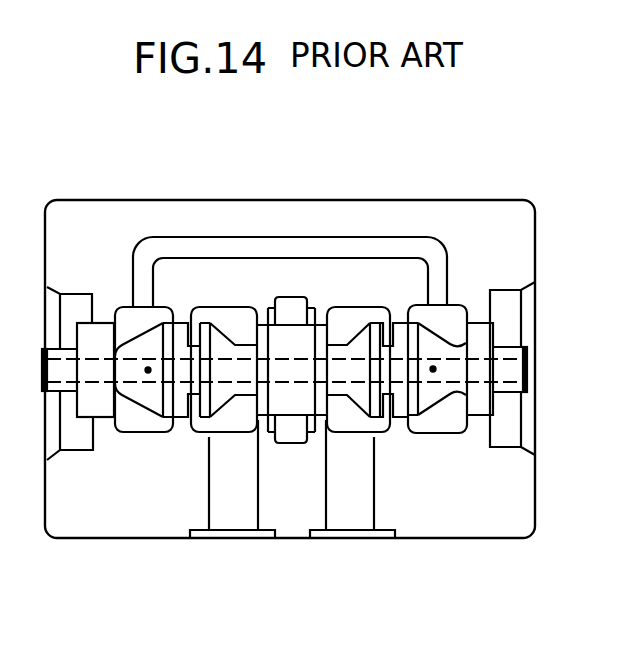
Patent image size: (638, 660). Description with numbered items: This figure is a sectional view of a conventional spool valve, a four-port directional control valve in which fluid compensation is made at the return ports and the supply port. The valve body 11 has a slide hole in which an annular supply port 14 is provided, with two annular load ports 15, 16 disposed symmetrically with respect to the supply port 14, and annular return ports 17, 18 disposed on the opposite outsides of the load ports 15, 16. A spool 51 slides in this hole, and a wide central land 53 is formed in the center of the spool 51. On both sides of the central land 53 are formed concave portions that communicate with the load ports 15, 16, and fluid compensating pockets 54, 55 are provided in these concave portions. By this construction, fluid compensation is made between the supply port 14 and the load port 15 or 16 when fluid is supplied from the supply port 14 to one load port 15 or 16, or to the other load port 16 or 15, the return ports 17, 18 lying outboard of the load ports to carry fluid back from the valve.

The valve body 11 is at (497, 520).
The supply port 14 is at (292, 433).
The load port 15 is at (220, 423).
The load port 16 is at (363, 423).
The return port 17 is at (143, 313).
The return port 18 is at (433, 313).
The spool 51 is at (105, 375).
The central land 53 is at (300, 325).
The fluid compensating pocket 54 is at (232, 330).
The fluid compensating pocket 55 is at (356, 330).